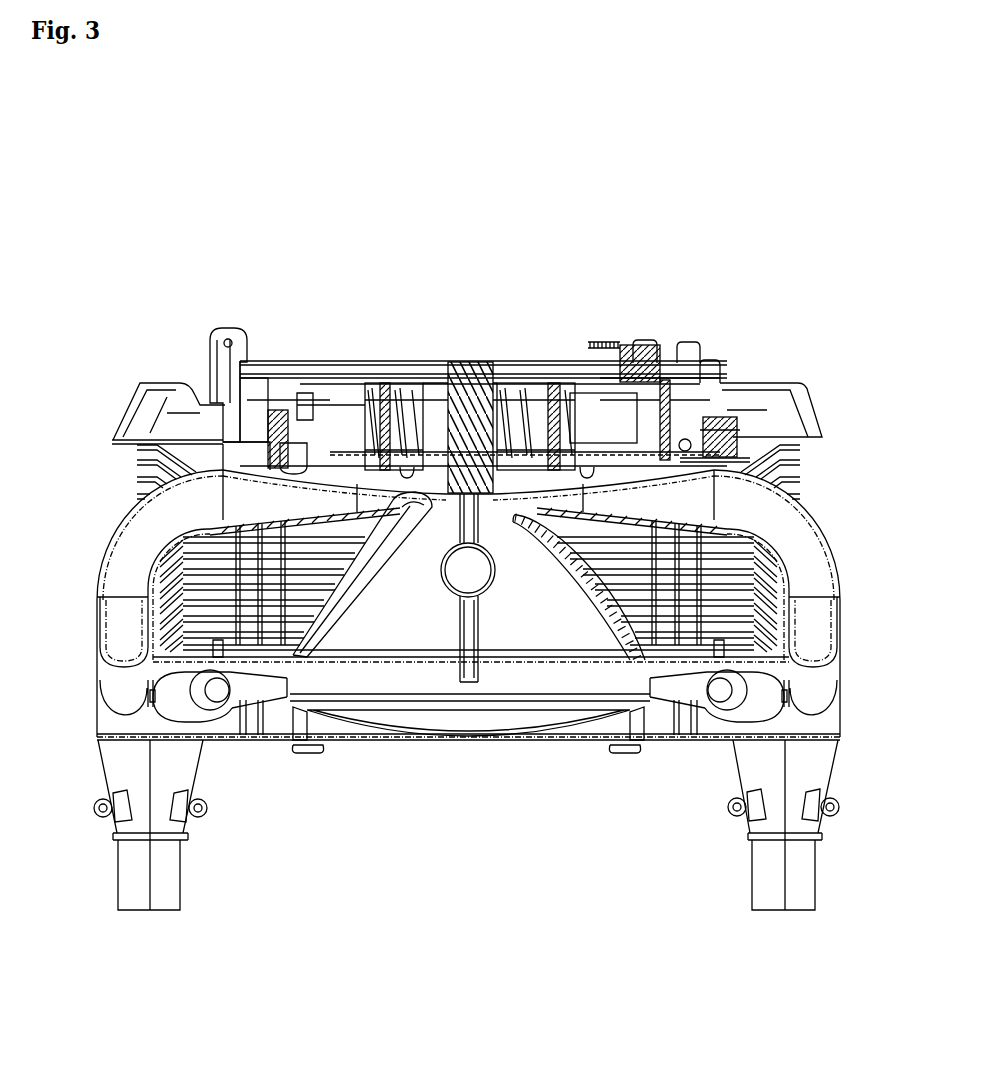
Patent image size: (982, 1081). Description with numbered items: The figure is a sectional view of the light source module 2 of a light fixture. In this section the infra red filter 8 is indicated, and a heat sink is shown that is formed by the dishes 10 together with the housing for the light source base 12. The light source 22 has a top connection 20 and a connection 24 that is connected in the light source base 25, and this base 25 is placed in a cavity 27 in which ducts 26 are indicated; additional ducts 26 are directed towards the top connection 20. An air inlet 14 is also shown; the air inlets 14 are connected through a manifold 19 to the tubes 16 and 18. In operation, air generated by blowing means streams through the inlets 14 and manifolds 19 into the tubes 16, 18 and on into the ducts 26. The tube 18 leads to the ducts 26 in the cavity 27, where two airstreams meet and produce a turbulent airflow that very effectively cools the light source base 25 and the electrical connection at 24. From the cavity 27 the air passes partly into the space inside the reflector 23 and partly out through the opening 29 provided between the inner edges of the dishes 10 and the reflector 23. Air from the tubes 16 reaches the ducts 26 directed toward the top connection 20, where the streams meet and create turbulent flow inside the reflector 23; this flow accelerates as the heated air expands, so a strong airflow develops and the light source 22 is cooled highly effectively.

The light source module 2 is at (356, 229).
The infra red filter 8 is at (530, 742).
The dishes 10 is at (797, 481).
The housing for the light source base 12 is at (807, 400).
The air inlet 14 is at (160, 912).
The tube 16 is at (187, 708).
The tube 18 is at (97, 688).
The manifold 19 is at (195, 770).
The top connection 20 is at (466, 682).
The light source 22 is at (457, 590).
The reflector 23 is at (332, 603).
The connection 24 is at (490, 497).
The light source base 25 is at (400, 486).
The ducts 26 is at (355, 493).
The cavity 27 is at (482, 428).
The opening 29 is at (420, 512).